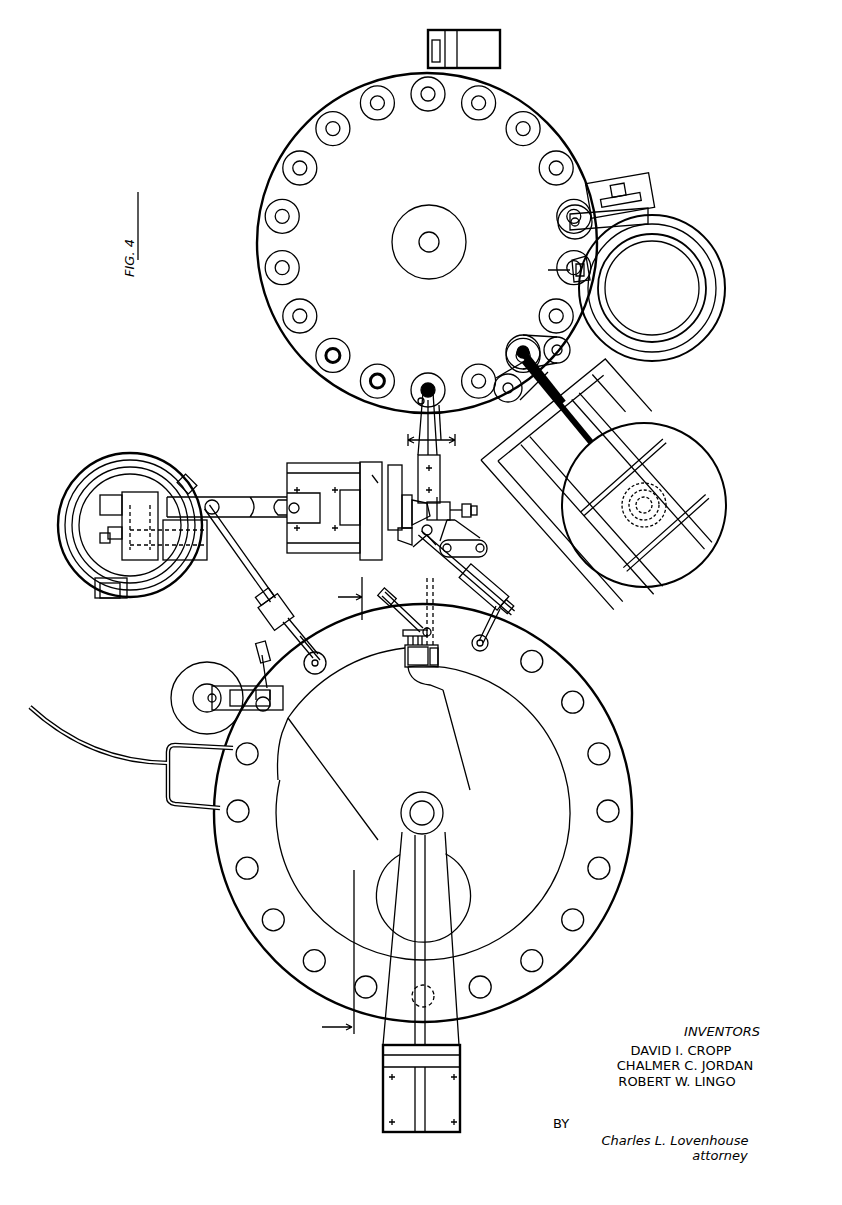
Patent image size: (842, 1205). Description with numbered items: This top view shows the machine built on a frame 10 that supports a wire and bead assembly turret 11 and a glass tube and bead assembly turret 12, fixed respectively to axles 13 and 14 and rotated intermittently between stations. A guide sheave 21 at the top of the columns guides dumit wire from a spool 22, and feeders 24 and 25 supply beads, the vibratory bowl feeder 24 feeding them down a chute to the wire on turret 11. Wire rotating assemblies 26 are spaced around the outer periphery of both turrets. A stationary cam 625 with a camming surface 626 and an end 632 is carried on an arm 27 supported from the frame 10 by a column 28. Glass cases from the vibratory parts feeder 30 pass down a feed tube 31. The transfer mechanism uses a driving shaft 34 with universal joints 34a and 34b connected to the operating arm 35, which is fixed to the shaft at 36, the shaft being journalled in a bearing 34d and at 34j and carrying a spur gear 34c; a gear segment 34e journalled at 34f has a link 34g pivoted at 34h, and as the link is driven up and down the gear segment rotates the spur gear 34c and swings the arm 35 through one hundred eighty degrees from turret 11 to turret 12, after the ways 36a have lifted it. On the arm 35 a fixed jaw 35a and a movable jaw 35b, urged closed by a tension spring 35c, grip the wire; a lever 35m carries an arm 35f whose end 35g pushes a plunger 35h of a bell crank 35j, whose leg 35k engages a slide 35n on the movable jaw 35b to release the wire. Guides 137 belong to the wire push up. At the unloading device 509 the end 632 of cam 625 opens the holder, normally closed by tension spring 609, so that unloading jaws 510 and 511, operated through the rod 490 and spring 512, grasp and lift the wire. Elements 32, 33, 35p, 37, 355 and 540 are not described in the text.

The frame 10 is at (313, 463).
The wire and bead assembly turret 11 is at (304, 125).
The glass tube and bead assembly turret 12 is at (251, 932).
The axle 13 is at (428, 238).
The axle 14 is at (435, 814).
The guide sheave 21 is at (520, 362).
The spool 22 is at (650, 518).
The vibratory type bowl feeder 24 is at (684, 234).
The feeder 25 is at (372, 96).
The wire rotating assemblies 26 is at (610, 758).
The arm 27 is at (394, 1030).
The column 28 is at (390, 1105).
The vibratory parts feeder 30 is at (132, 453).
The feed tube 31 is at (240, 567).
The pivot 32 is at (187, 480).
The slide block 33 is at (288, 606).
The driving shaft 34 is at (270, 497).
The flexible or universal joint 34a is at (208, 500).
The flexible or universal joint 34b is at (285, 517).
The spur gear 34c is at (108, 497).
The bearing 34d is at (140, 495).
The gear segment 34e is at (110, 532).
The journal of gear segment 34f is at (97, 540).
The link 34g is at (110, 598).
The pivot 34h is at (97, 588).
The journal 34j is at (352, 505).
The operating arm 35 is at (412, 455).
The fixed jaw 35a is at (427, 384).
The movable jaw 35b is at (418, 401).
The tension spring 35c is at (440, 420).
The arm 35f is at (487, 546).
The end of arm 35g is at (474, 511).
The plunger 35h is at (447, 502).
The bell crank 35j is at (447, 600).
The leg 35k is at (414, 550).
The lever 35m is at (415, 503).
The slide 35n is at (438, 497).
The stop 35p is at (404, 537).
The fixing point 36 is at (395, 495).
The ways 36a is at (382, 490).
The pointer arm 37 is at (437, 395).
The guides 137 is at (432, 50).
The cylinder 355 is at (520, 610).
The rod 490 is at (200, 699).
The unloading device 509 is at (258, 686).
The unloading jaw 510 is at (311, 670).
The movable jaw 511 is at (272, 711).
The spring 512 is at (243, 711).
The latch block 540 is at (407, 657).
The tension spring 609 is at (407, 672).
The stationary cam 625 is at (337, 766).
The camming surface 626 is at (365, 663).
The end of cam 632 is at (287, 722).